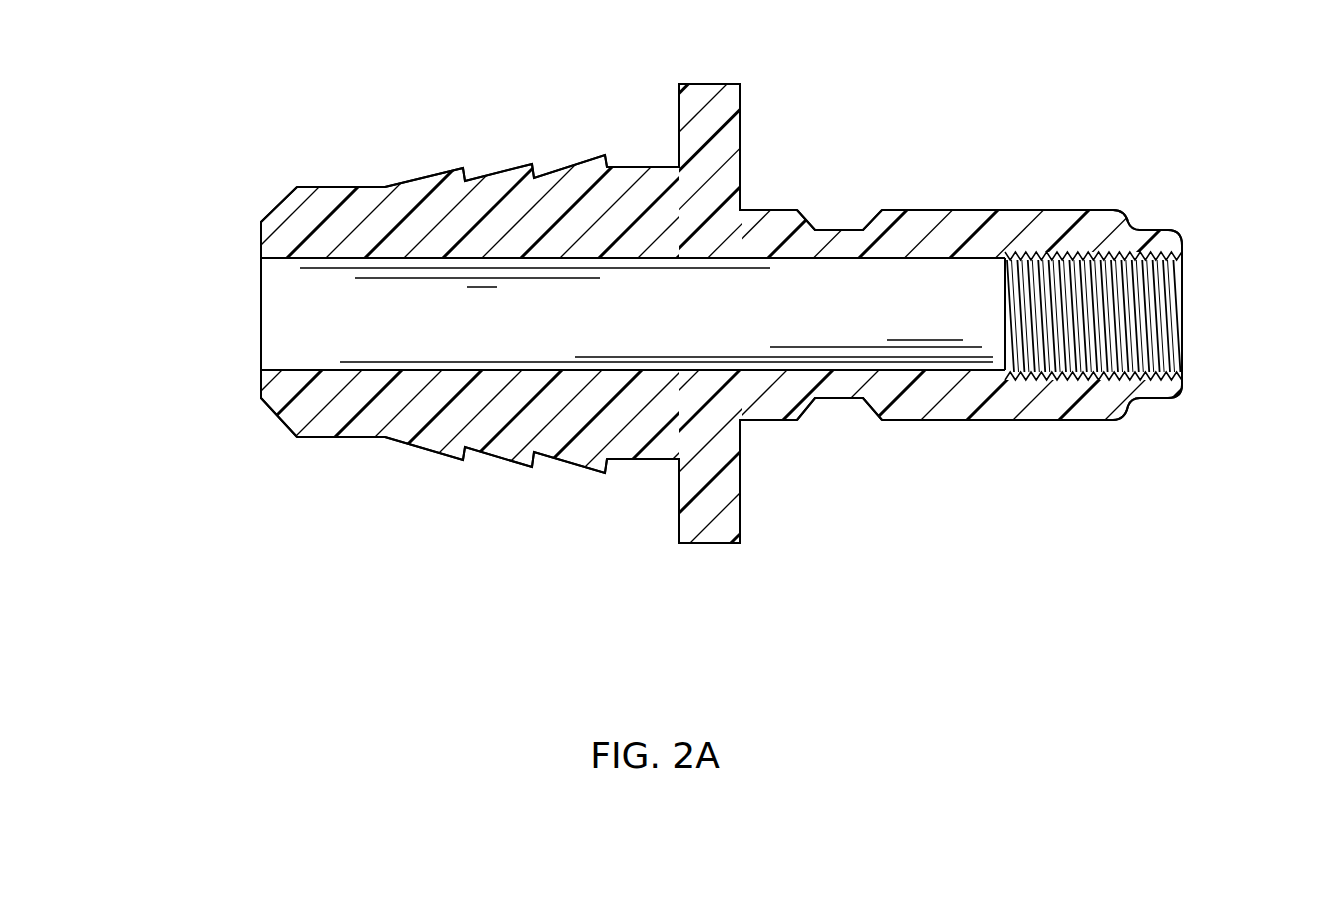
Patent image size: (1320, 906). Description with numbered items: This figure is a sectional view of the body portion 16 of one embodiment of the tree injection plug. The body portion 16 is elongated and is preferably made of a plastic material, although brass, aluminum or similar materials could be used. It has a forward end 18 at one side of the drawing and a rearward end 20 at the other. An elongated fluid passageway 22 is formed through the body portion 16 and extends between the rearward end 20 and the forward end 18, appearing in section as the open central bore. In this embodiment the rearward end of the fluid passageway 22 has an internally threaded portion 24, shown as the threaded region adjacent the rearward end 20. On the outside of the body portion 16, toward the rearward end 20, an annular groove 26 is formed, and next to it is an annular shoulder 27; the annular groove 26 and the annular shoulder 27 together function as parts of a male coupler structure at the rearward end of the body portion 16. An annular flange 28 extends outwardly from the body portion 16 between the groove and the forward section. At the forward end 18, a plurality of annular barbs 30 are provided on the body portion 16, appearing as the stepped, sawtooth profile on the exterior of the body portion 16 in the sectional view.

The body portion 16 is at (921, 196).
The forward end 18 is at (237, 277).
The rearward end 20 is at (1197, 288).
The fluid passageway 22 is at (930, 308).
The internally threaded portion 24 is at (1123, 345).
The annular groove 26 is at (840, 227).
The annular shoulder 27 is at (1128, 213).
The annular flange 28 is at (725, 108).
The annular barbs 30 is at (533, 163).